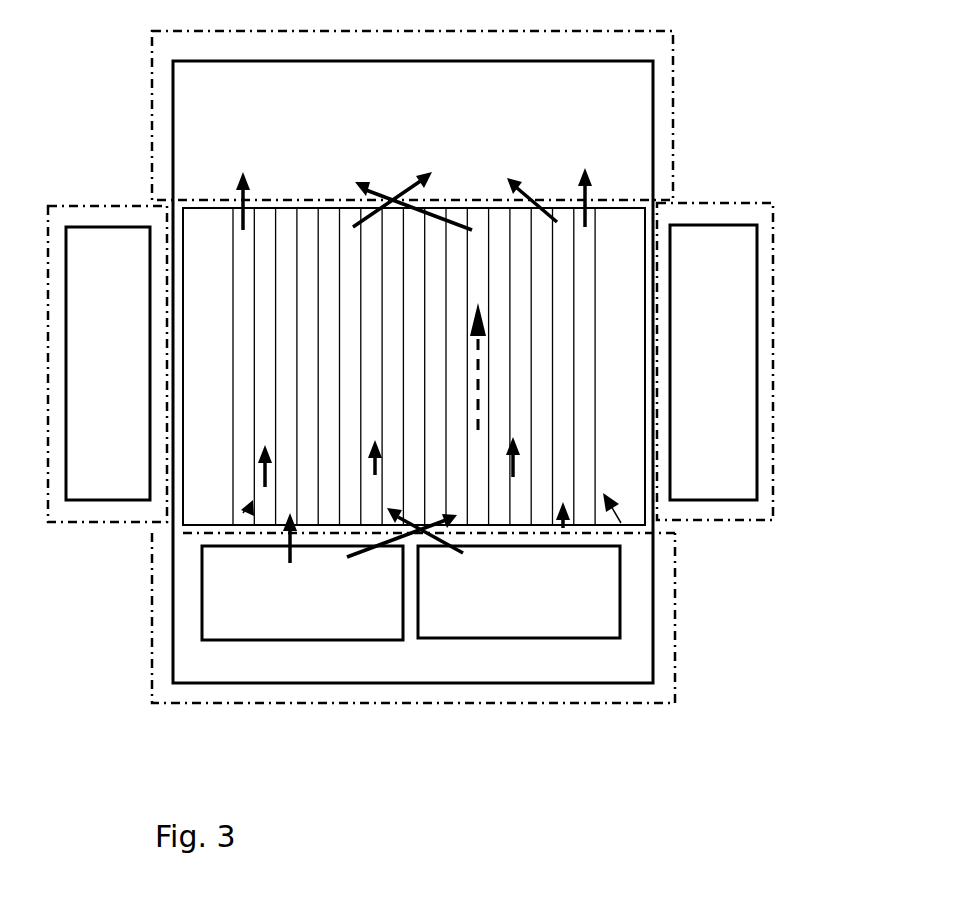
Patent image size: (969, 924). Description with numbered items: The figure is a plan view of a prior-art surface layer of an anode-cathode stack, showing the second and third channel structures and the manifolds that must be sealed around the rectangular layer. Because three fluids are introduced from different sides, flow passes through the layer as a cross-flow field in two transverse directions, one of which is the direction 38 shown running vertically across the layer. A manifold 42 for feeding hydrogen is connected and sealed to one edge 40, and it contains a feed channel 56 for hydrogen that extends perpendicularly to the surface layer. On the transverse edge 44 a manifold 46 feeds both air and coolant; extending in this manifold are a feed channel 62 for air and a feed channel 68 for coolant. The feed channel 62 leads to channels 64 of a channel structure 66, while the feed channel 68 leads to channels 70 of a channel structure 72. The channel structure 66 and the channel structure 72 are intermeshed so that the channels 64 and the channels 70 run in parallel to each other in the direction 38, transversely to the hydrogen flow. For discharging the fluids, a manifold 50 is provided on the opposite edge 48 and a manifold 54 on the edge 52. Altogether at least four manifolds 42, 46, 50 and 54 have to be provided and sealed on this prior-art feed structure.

The direction 38 is at (478, 432).
The edge 40 is at (167, 228).
The manifold 42 is at (68, 205).
The edge 44 is at (195, 528).
The manifold 46 is at (152, 608).
The edge 48 is at (655, 523).
The manifold 50 is at (720, 520).
The edge 52 is at (627, 207).
The manifold 54 is at (673, 92).
The feed channel 56 is at (118, 386).
The feed channel 62 is at (558, 619).
The channels 64 is at (563, 408).
The channel structure 66 is at (621, 523).
The feed channel 68 is at (308, 619).
The channels 70 is at (538, 390).
The channel structure 72 is at (243, 513).